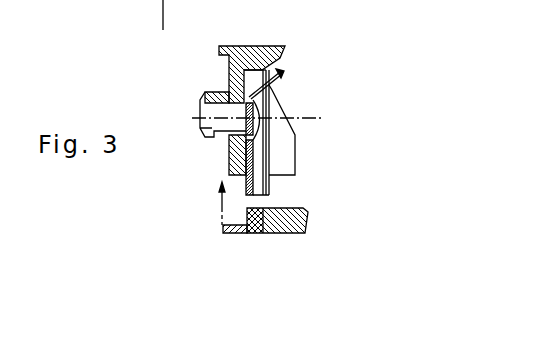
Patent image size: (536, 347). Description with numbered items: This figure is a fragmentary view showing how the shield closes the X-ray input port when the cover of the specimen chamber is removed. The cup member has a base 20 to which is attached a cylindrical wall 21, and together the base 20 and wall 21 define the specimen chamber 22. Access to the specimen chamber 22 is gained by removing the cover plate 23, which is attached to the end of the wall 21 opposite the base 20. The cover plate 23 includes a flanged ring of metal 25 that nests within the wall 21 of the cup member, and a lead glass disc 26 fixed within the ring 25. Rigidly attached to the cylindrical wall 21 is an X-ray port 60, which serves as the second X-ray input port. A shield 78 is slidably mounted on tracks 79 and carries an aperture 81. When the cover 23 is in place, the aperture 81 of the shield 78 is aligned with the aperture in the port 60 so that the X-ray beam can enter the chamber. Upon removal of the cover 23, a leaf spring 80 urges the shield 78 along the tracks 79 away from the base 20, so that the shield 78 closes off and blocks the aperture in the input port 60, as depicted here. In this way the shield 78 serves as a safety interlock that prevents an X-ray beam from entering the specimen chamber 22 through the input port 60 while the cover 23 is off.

The base 20 is at (283, 47).
The X-ray port 60 is at (216, 94).
The cylindrical wall 21 is at (237, 165).
The shield 78 is at (272, 195).
The tracks 79 is at (268, 95).
The aperture 81 is at (268, 128).
The leaf spring 80 is at (281, 73).
The specimen chamber 22 is at (290, 160).
The lead glass disc 26 is at (303, 230).
The flanged ring 25 is at (243, 233).
The cover plate 23 is at (292, 233).